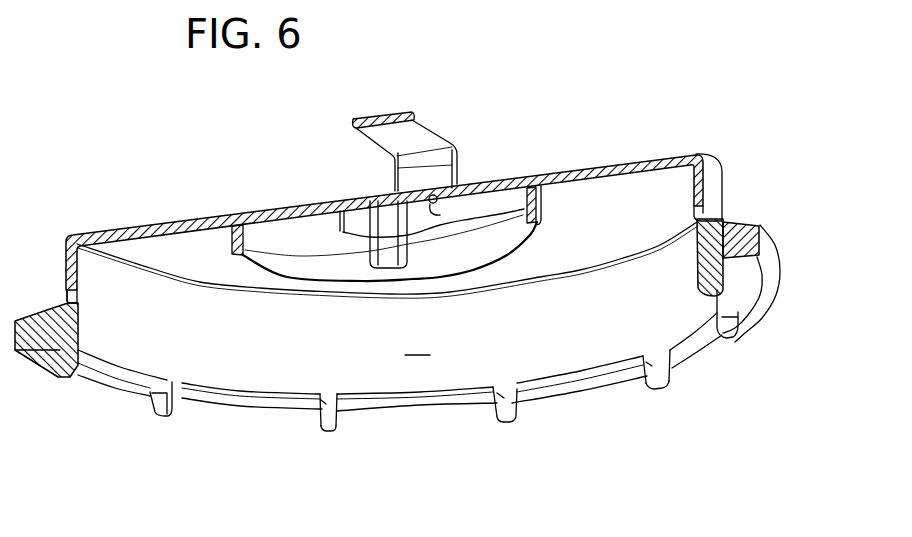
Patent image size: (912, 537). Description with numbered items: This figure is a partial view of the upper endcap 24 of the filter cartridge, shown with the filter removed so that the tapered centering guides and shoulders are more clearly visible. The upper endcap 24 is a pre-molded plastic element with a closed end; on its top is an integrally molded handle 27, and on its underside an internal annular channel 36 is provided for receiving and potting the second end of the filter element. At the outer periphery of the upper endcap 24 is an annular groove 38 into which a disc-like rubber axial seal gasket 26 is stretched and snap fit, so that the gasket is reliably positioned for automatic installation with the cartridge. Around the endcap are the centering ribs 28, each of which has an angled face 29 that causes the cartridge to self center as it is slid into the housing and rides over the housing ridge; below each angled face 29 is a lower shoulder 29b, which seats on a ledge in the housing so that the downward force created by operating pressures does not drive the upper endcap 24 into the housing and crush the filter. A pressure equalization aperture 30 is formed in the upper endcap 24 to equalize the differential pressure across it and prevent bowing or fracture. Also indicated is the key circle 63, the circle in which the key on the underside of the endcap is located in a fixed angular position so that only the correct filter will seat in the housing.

The upper endcap 24 is at (402, 282).
The axial seal gasket 26 is at (768, 246).
The handle 27 is at (398, 111).
The centering ribs 28 is at (498, 414).
The angled face 29 is at (151, 405).
The lower shoulders 29b is at (327, 433).
The pressure equalization aperture 30 is at (64, 295).
The internal annular channel 36 is at (612, 192).
The annular groove 38 is at (753, 225).
The key circle 63 is at (433, 232).